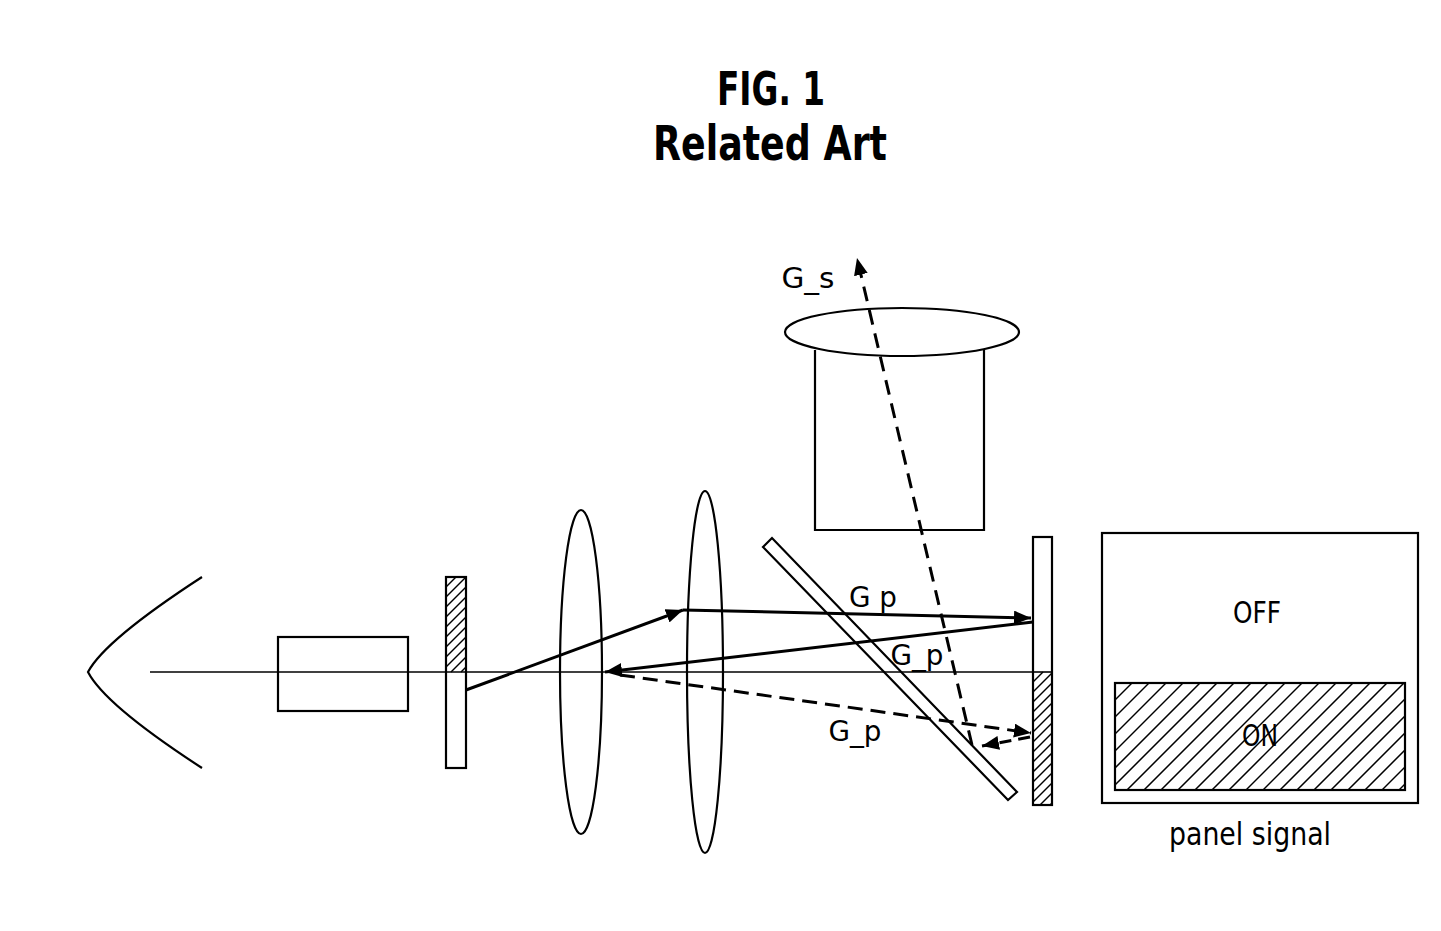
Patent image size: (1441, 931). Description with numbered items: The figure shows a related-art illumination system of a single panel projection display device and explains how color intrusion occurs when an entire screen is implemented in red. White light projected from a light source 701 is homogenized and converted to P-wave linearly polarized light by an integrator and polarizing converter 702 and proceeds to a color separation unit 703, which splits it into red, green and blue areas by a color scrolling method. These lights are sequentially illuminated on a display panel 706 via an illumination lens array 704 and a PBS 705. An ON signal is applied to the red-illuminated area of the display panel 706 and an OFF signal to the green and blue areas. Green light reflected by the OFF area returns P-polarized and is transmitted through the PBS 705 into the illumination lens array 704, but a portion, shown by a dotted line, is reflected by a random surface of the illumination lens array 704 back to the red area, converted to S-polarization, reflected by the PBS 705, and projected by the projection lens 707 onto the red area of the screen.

The light source 701 is at (152, 600).
The integrator and polarizing converter 702 is at (343, 635).
The color separation unit 703 is at (453, 770).
The illumination lens array 704 is at (575, 523).
The PBS 705 is at (968, 763).
The display panel 706 is at (1042, 537).
The projection lens 707 is at (1020, 332).